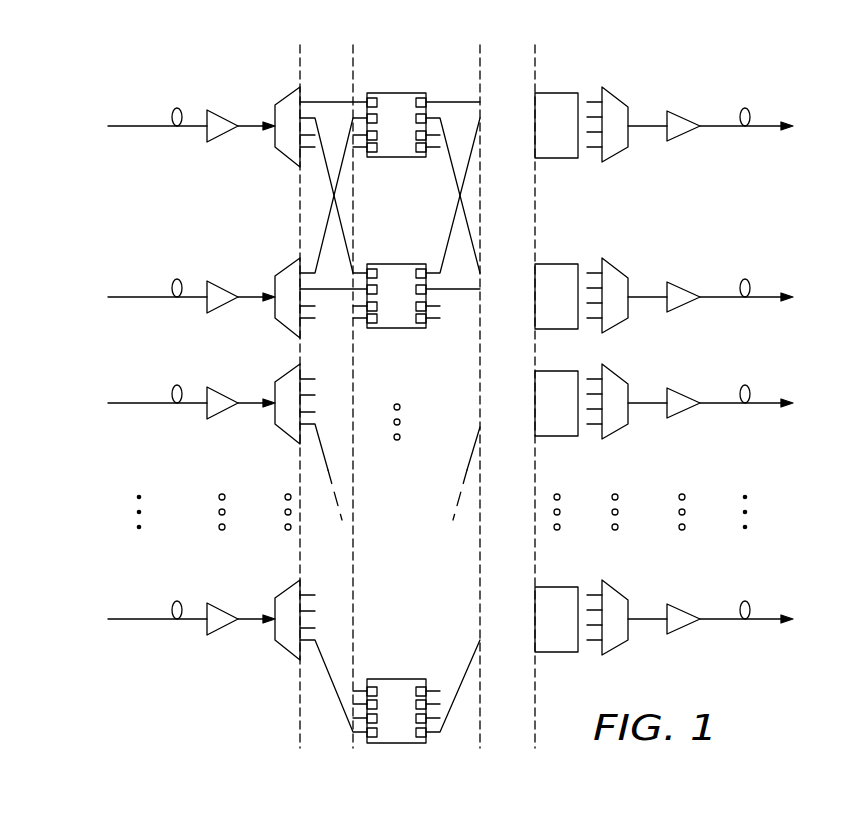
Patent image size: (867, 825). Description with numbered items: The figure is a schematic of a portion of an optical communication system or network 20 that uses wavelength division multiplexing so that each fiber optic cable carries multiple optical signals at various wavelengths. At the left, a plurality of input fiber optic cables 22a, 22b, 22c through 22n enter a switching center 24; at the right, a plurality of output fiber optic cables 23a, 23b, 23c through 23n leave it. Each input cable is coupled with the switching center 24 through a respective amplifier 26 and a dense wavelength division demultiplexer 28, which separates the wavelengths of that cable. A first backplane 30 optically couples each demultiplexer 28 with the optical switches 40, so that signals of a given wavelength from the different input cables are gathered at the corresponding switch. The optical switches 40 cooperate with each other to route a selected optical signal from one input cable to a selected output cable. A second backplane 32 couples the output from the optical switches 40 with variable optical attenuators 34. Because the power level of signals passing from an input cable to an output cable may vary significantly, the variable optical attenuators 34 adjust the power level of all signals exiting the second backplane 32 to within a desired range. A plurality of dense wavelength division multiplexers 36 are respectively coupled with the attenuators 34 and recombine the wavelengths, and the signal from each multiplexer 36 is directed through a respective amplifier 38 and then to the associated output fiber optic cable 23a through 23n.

The communication system 20 is at (187, 690).
The input fiber optic cable 22a is at (137, 130).
The input fiber optic cable 22b is at (137, 301).
The input fiber optic cable 22c is at (137, 407).
The input fiber optic cable 22n is at (137, 623).
The output fiber optic cable 23a is at (768, 122).
The output fiber optic cable 23b is at (768, 293).
The output fiber optic cable 23c is at (768, 399).
The output fiber optic cable 23n is at (765, 622).
The switching center 24 is at (290, 738).
The amplifier 26 is at (227, 111).
The DWD demultiplexer 28 is at (290, 95).
The backplane 30 is at (315, 741).
The second backplane 32 is at (516, 741).
The variable optical attenuator 34 is at (562, 92).
The DWD multiplexer 36 is at (612, 90).
The amplifier 38 is at (682, 112).
The optical switch 40 is at (403, 93).